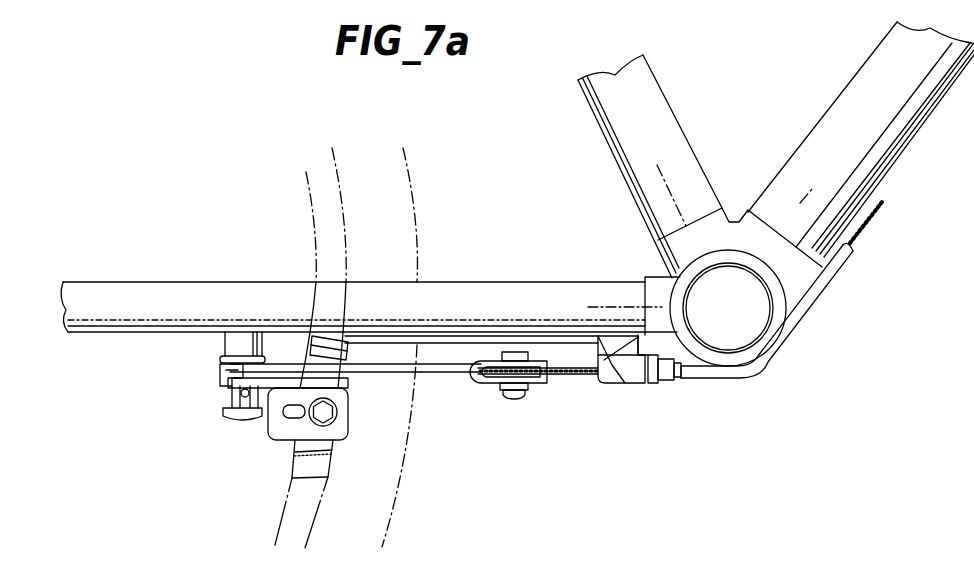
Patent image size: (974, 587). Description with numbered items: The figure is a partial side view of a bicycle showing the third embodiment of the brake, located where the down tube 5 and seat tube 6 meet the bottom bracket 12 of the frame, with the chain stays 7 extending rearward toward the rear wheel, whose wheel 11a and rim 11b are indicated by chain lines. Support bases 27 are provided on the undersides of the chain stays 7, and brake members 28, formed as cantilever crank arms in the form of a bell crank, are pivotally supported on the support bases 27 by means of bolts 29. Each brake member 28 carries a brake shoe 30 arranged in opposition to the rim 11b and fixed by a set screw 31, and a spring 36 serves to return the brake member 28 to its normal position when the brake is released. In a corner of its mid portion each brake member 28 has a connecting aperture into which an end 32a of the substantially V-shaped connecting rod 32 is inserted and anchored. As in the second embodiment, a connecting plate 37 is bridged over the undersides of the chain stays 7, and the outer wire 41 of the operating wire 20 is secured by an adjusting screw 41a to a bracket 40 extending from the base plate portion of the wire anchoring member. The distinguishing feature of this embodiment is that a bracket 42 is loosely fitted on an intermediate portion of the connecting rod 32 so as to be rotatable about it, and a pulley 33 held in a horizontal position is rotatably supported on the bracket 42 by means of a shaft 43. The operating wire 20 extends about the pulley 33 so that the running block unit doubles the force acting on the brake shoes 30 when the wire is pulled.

The down tube 5 is at (902, 132).
The seat tube 6 is at (673, 113).
The chain stays 7 is at (205, 282).
The wheel 11a is at (428, 222).
The rim 11b is at (313, 216).
The bottom bracket 12 is at (816, 280).
The operating wire 20 is at (576, 376).
The support bases 27 is at (222, 337).
The brake members 28 is at (222, 384).
The bolts 29 is at (238, 422).
The brake shoes 30 is at (300, 460).
The set screws 31 is at (330, 416).
The connecting rod 32 is at (400, 374).
The ends of the connecting rod 32a is at (228, 405).
The pulley 33 is at (540, 383).
The spring 36 is at (222, 365).
The connecting plate 37 is at (468, 338).
The bracket 40 is at (630, 384).
The outer wire 41 is at (748, 385).
The adjusting screw 41a is at (660, 384).
The bracket 42 is at (484, 385).
The shaft 43 is at (513, 398).